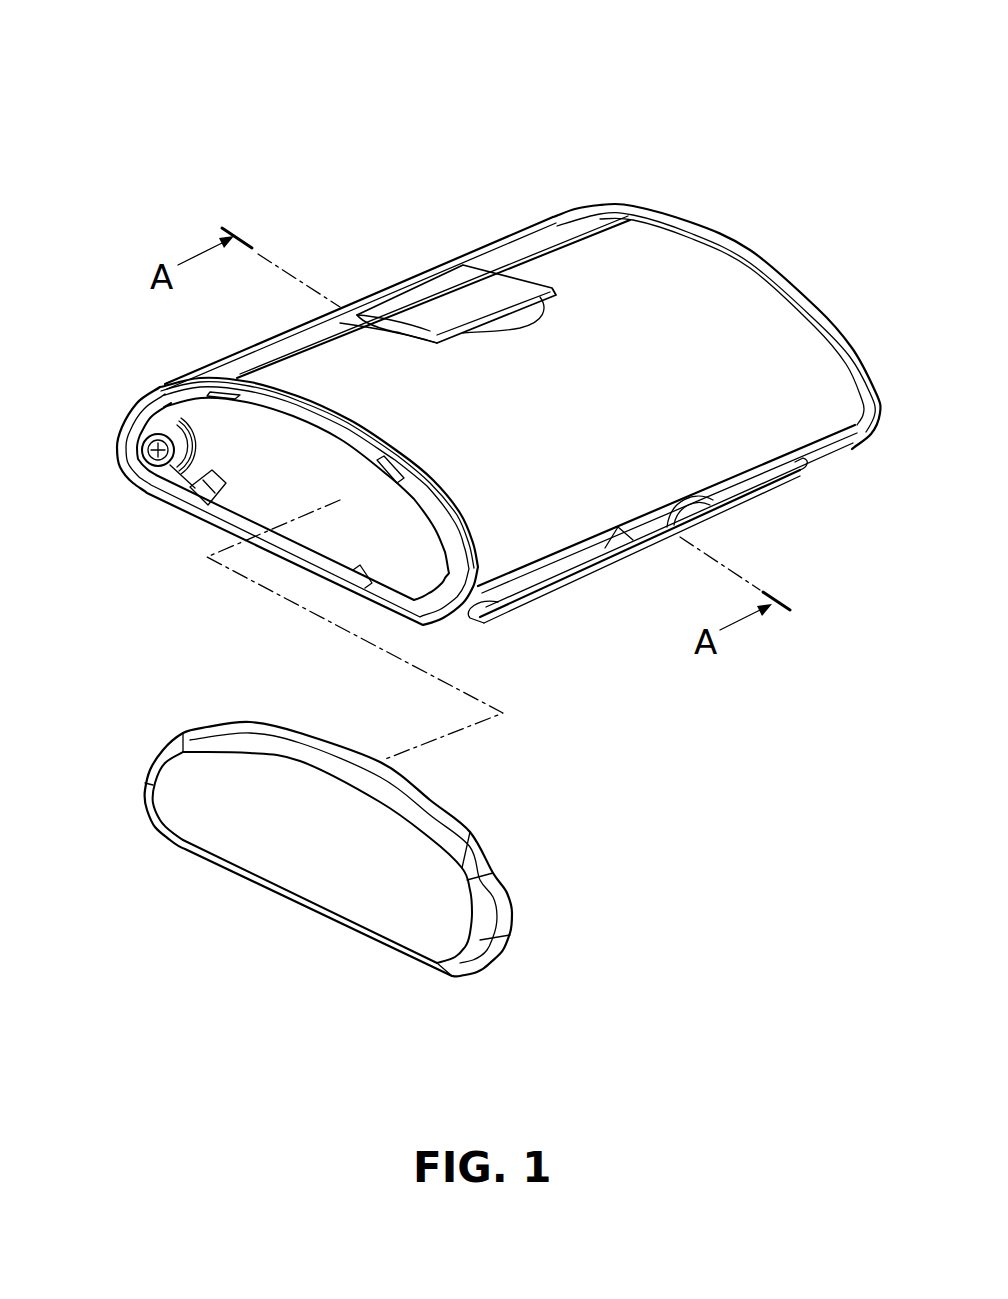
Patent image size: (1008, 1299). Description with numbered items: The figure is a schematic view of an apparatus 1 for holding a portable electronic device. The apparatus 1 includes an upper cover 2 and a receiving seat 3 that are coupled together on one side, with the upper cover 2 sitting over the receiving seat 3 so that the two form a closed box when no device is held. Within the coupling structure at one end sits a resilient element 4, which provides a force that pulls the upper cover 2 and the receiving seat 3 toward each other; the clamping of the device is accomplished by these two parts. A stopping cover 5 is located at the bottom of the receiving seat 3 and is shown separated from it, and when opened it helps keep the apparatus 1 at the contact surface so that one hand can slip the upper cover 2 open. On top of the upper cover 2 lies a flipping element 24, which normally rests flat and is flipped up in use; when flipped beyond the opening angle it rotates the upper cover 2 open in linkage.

The apparatus for holding portable electronic device 1 is at (653, 162).
The upper cover 2 is at (535, 232).
The receiving seat 3 is at (807, 463).
The resilient element 4 is at (178, 418).
The stopping cover 5 is at (577, 574).
The flipping element 24 is at (458, 302).